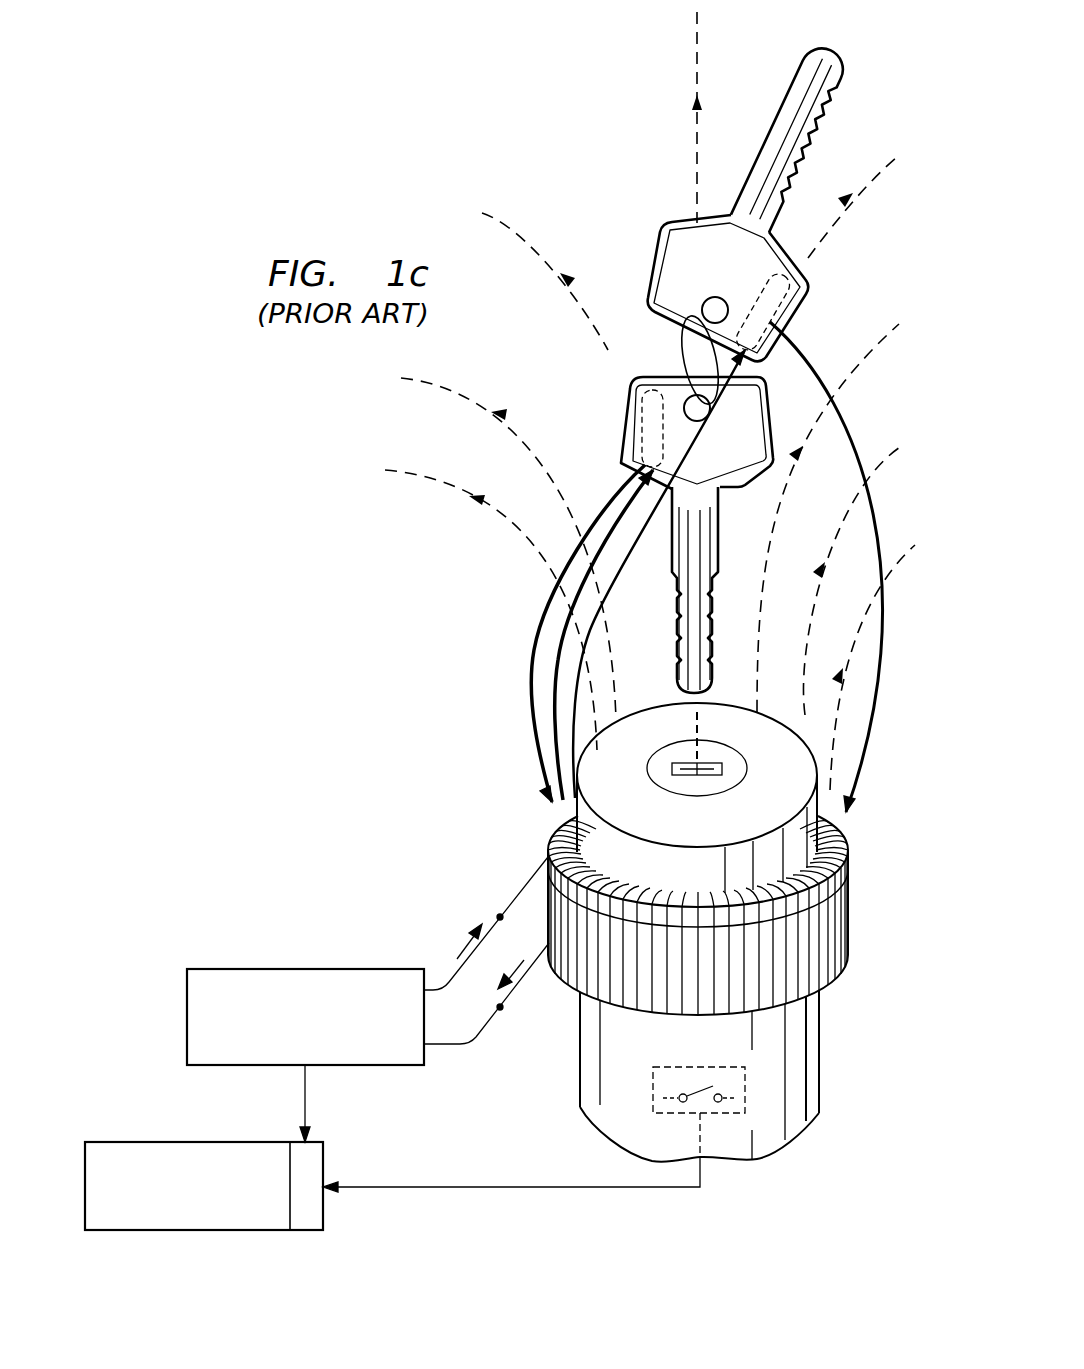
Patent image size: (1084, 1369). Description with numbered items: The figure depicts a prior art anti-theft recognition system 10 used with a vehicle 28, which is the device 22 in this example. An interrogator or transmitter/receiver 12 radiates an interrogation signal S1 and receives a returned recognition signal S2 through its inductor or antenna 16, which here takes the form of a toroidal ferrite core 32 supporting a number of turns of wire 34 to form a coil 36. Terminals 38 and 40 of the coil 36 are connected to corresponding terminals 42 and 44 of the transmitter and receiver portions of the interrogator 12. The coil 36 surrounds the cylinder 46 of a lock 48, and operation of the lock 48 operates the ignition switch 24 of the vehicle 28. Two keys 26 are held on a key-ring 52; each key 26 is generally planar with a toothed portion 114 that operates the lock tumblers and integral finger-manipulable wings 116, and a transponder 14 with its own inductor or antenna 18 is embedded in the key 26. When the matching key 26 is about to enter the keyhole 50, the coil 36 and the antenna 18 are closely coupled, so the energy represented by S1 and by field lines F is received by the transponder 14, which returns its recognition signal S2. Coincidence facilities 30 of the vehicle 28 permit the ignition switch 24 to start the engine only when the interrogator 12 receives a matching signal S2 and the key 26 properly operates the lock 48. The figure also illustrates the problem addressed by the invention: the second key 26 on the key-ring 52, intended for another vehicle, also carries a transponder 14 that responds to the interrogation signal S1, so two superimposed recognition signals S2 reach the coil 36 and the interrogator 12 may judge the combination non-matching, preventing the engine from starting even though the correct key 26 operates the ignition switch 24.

The recognition system 10 is at (585, 180).
The interrogator or transmitter/receiver 12 is at (257, 969).
The transponder 14 is at (671, 358).
The inductor or antenna of the transponder 18 is at (735, 288).
The inductor or antenna of the interrogator 16 is at (873, 893).
The device 22 is at (130, 1142).
The ignition switch 24 is at (660, 1052).
The key 26 is at (672, 222).
The vehicle 28 is at (176, 1213).
The coincidence facilities 30 is at (307, 1223).
The toroidal ferrite core 32 is at (677, 917).
The turns of wire 34 is at (822, 955).
The coil 36 is at (850, 827).
The terminal of the coil 38 is at (486, 923).
The terminal of the interrogator 42 is at (500, 917).
The terminal of the coil 40 is at (496, 1001).
The terminal of the interrogator 44 is at (500, 1007).
The lock cylinder 46 is at (820, 1080).
The lock 48 is at (778, 714).
The keyhole 50 is at (672, 762).
The key-ring 52 is at (685, 353).
The toothed portion 114 is at (845, 86).
The wings 116 is at (652, 270).
The interrogation signal S1 is at (693, 443).
The recognition signal S2 is at (530, 692).
The field lines F is at (700, 44).